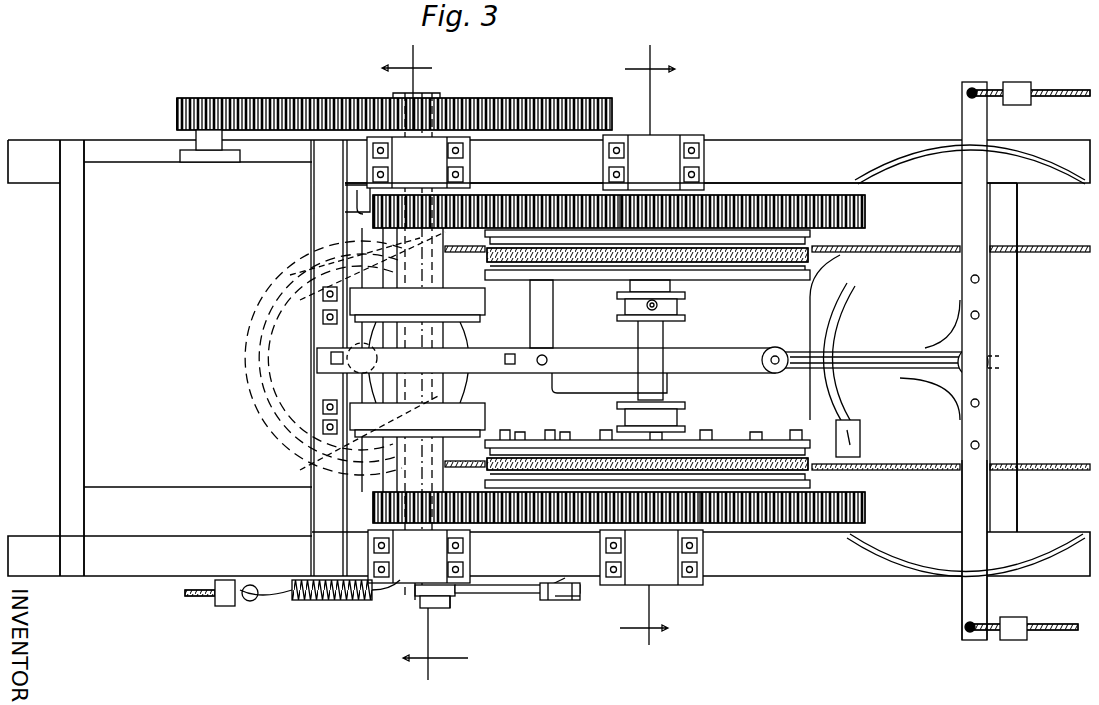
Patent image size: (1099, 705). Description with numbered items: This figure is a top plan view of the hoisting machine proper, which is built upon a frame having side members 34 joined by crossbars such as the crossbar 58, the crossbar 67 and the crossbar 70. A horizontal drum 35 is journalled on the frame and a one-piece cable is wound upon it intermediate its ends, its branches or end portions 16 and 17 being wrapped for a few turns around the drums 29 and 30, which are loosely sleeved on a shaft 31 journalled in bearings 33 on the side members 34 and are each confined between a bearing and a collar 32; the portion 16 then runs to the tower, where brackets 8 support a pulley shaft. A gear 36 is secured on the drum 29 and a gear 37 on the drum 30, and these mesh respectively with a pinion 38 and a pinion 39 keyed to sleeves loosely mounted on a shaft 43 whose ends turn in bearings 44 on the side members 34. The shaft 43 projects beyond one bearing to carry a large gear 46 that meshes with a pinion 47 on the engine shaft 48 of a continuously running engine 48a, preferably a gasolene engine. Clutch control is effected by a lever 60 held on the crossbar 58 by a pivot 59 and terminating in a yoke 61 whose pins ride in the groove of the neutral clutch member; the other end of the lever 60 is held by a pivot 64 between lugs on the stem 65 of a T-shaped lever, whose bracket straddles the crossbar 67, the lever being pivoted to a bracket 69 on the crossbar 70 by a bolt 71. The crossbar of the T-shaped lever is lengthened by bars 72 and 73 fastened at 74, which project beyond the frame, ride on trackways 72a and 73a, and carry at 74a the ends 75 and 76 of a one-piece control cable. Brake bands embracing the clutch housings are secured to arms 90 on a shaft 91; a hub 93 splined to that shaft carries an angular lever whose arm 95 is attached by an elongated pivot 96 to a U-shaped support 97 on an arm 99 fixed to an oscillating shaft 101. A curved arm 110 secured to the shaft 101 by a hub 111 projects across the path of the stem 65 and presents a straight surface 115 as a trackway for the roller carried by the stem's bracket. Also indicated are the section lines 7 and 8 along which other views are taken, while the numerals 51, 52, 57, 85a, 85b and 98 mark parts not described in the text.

The section line 7- 7 is at (647, 353).
The brackets 8 is at (425, 370).
The cable portion 16 is at (300, 282).
The cable portion 17 is at (262, 423).
The drum 29 is at (810, 276).
The drum 30 is at (812, 484).
The shaft 31 is at (660, 336).
The collar 32 is at (678, 306).
The bearings 33 is at (662, 142).
The side members 34 is at (825, 150).
The horizontal drum 35 is at (265, 330).
The gear 36 is at (750, 206).
The gear 37 is at (800, 525).
The pinion 38 is at (400, 212).
The pinion 39 is at (400, 508).
The shaft 43 is at (418, 596).
The bearing 44 is at (440, 150).
The large gear 46 is at (320, 96).
The pinion 47 is at (207, 98).
The engine shaft 48 is at (196, 136).
The engine 48a is at (84, 242).
The arm 51 is at (340, 440).
The arm 52 is at (330, 262).
The clutch fork 57 is at (362, 335).
The crossbar 58 is at (553, 314).
The pivot 59 is at (546, 356).
The lever 60 is at (596, 374).
The yoke 61 is at (345, 358).
The pivot 64 is at (770, 350).
The stem of T-shaped lever 65 is at (908, 352).
The crossbar 67 is at (795, 300).
The bracket 69 is at (990, 360).
The crossbar 70 is at (1017, 313).
The bolt 71 is at (1000, 350).
The lengthening bar 72 is at (966, 218).
The trackway 72a is at (912, 145).
The lengthening bar 73 is at (966, 508).
The trackway 73a is at (922, 572).
The bolts or rivets 74 is at (982, 280).
The securing means 74a is at (1017, 90).
The control cable end 75 is at (1060, 90).
The control cable end 76 is at (1055, 626).
The clutch block 85a is at (478, 418).
The clutch block 85b is at (478, 307).
The arms 90 is at (450, 290).
The shaft 91 is at (432, 610).
The hub 93 is at (452, 606).
The arm 95 is at (525, 594).
The elongated pivot 96 is at (570, 602).
The U-shaped support 97 is at (556, 600).
The spring 98 is at (320, 602).
The arm 99 is at (232, 606).
The oscillating shaft 101 is at (840, 420).
The curved arm 110 is at (840, 322).
The hub 111 is at (860, 440).
The straight surface 115 is at (848, 305).